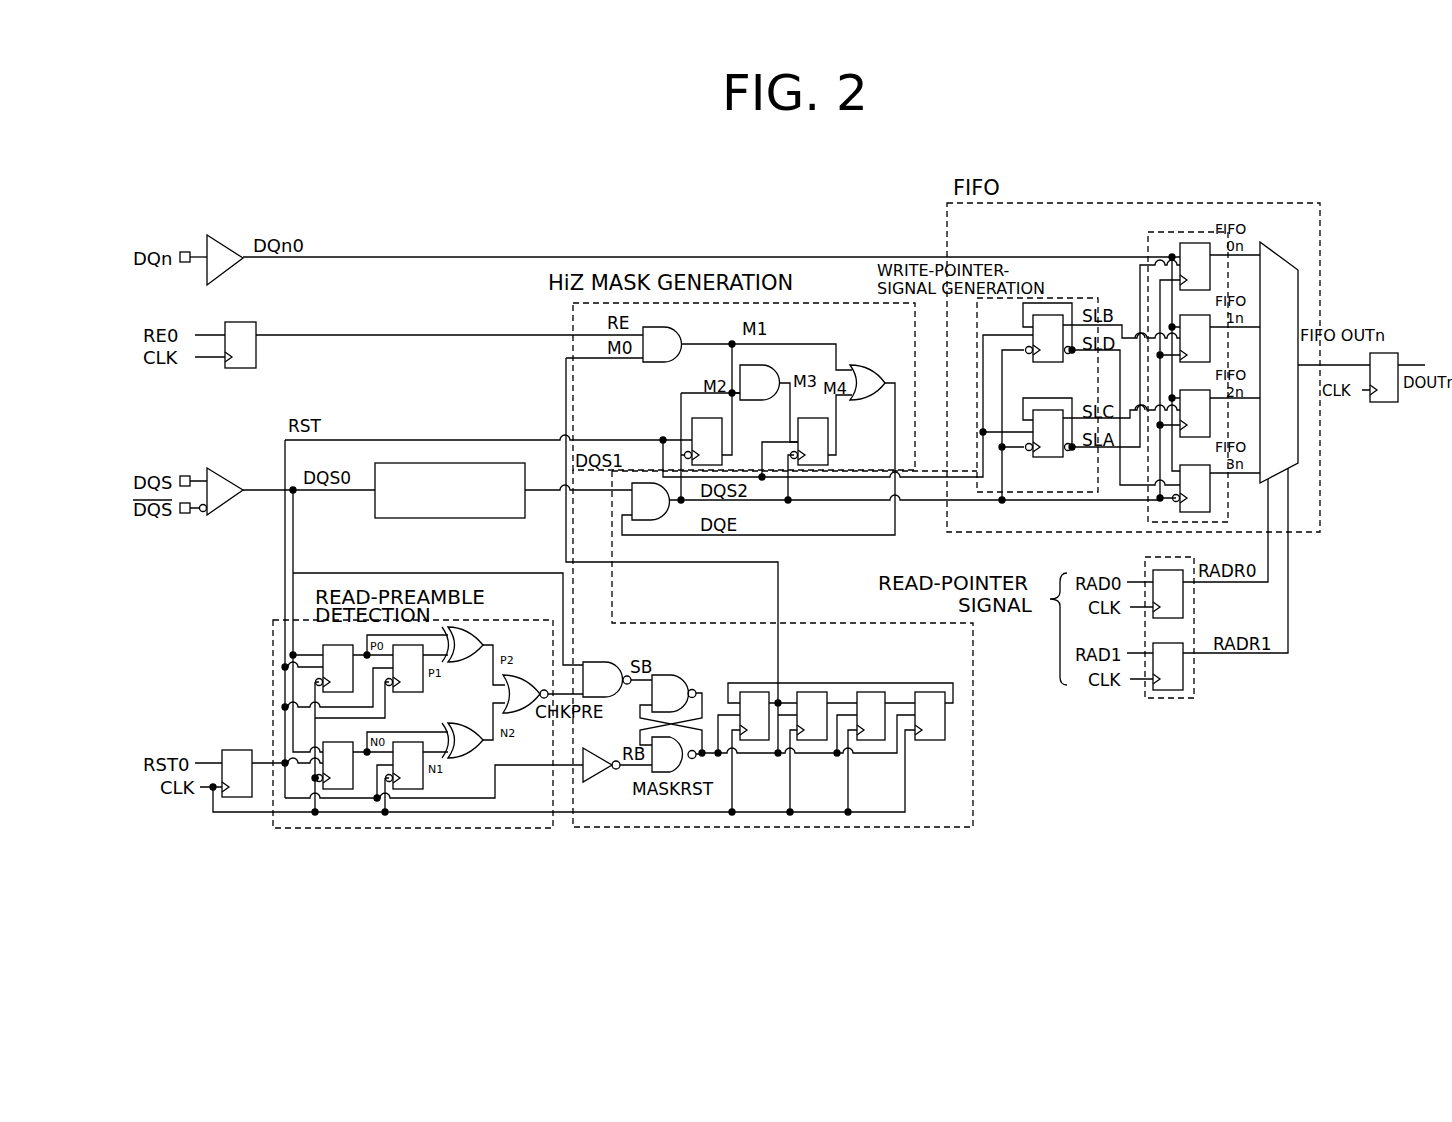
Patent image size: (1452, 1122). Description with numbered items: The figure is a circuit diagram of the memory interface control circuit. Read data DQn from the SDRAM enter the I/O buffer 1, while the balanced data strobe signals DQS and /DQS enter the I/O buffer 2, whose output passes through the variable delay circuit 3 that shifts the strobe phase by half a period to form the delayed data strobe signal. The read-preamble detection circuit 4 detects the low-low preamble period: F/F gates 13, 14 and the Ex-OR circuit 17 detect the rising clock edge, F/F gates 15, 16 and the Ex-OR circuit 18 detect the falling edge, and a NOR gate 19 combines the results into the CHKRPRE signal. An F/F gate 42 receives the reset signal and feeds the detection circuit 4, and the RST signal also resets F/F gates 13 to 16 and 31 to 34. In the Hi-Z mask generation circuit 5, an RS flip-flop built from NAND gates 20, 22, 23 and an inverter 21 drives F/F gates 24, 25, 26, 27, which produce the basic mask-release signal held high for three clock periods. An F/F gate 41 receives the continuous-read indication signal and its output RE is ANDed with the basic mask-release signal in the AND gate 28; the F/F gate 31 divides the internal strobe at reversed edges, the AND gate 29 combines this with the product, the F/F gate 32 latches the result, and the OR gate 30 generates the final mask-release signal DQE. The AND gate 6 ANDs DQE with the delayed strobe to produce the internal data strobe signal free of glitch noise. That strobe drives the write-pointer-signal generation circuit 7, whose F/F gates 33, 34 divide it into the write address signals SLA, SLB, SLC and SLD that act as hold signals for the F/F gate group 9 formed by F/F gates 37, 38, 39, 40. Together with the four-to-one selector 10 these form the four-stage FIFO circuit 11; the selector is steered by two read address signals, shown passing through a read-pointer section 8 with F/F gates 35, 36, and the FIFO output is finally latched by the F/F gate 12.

The I/O buffer 1 is at (216, 242).
The I/O buffer 2 is at (218, 472).
The variable delay circuit 3 is at (390, 518).
The read-preamble detection circuit 4 is at (515, 573).
The Hi-Z mask generation circuit 5 is at (820, 303).
The AND gate 6 is at (645, 483).
The write-pointer-signal generation circuit 7 is at (1098, 303).
The read-pointer signal circuit 8 is at (1145, 565).
The F/F gate group 9 is at (1195, 232).
The 4-to-1 selector 10 is at (1278, 252).
The FIFO circuit 11 is at (1280, 203).
The F/F gate 12 is at (1396, 353).
The F/F gate 13 is at (336, 645).
The F/F gate 14 is at (423, 683).
The F/F gate 15 is at (330, 742).
The F/F gate 16 is at (404, 742).
The Ex-OR circuit 17 is at (478, 630).
The Ex-OR circuit 18 is at (457, 727).
The NOR gate 19 is at (525, 680).
The NAND gate 20 is at (600, 662).
The inverter 21 is at (597, 757).
The NAND gate 22 is at (680, 675).
The NAND gate 23 is at (690, 765).
The F/F gate 24 is at (755, 692).
The F/F gate 25 is at (812, 692).
The F/F gate 26 is at (873, 692).
The F/F gate 27 is at (931, 692).
The AND gate 28 is at (680, 330).
The AND gate 29 is at (772, 368).
The OR gate 30 is at (868, 366).
The F/F gate 31 is at (707, 418).
The F/F gate 32 is at (828, 450).
The F/F gate 33 is at (1030, 335).
The F/F gate 34 is at (1050, 457).
The read-address flip-flop 35 is at (1183, 602).
The read-address flip-flop 36 is at (1183, 679).
The F/F gate 37 is at (1210, 272).
The F/F gate 38 is at (1210, 342).
The F/F gate 39 is at (1210, 415).
The F/F gate 40 is at (1210, 505).
The F/F gate 41 is at (243, 322).
The F/F gate 42 is at (233, 750).